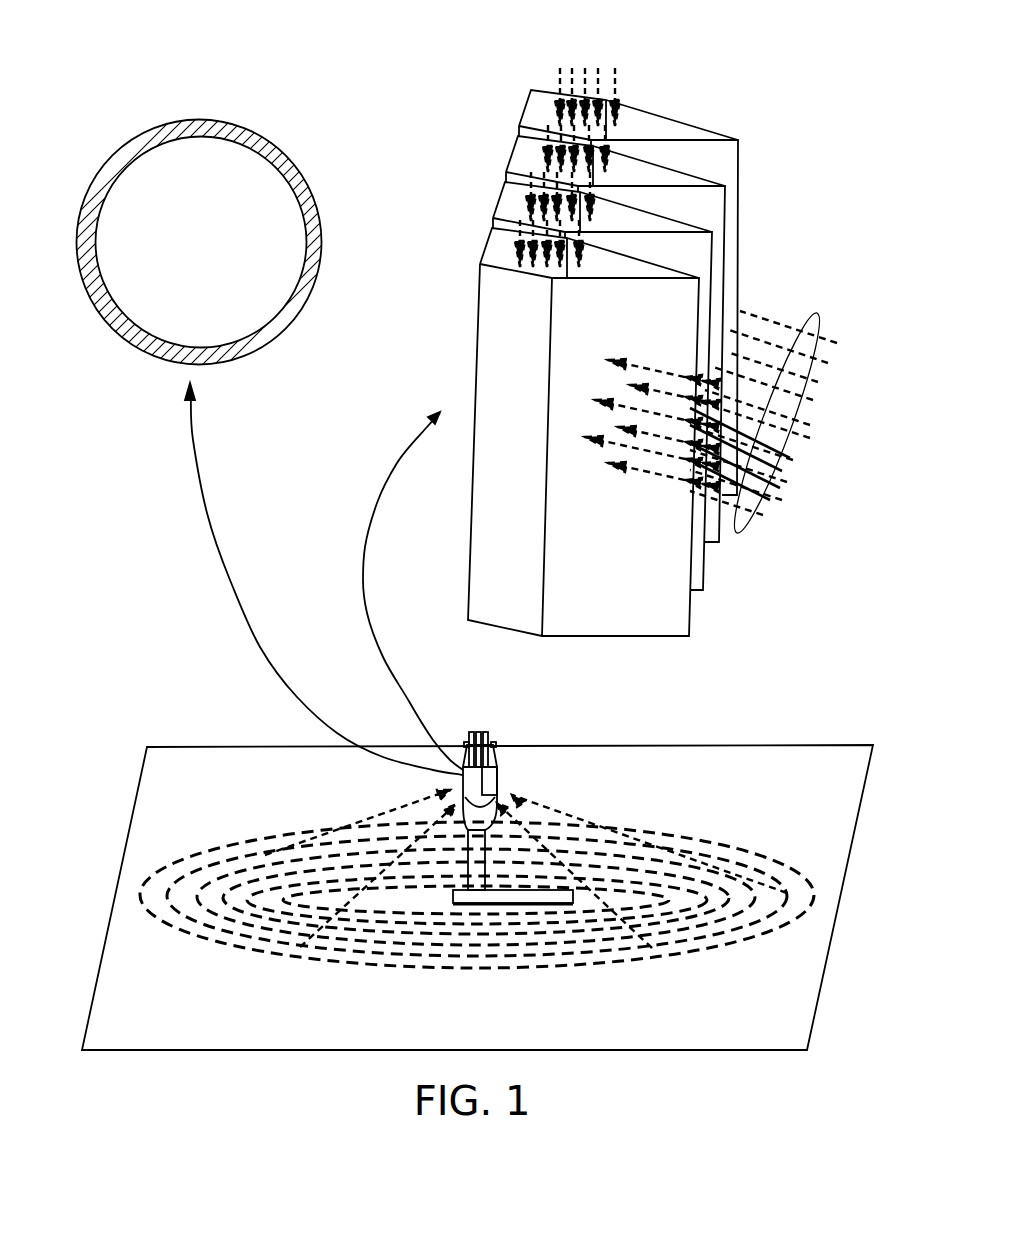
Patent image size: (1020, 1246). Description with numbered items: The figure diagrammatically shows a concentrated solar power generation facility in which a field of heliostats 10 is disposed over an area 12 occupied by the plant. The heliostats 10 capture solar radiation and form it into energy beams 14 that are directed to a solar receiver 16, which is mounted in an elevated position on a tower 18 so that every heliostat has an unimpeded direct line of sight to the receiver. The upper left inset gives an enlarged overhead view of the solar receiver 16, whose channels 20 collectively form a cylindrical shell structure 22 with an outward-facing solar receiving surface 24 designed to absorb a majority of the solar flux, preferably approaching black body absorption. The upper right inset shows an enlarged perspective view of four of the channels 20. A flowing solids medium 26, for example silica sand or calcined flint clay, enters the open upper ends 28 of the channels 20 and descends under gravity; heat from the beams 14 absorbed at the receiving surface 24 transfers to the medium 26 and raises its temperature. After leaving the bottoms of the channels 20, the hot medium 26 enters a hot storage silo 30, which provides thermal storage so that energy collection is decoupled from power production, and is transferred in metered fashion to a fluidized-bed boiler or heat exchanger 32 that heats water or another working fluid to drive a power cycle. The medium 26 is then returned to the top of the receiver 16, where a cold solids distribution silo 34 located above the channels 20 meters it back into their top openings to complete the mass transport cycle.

The heliostats 10 is at (237, 867).
The area 12 is at (128, 825).
The energy beams 14 is at (817, 313).
The solar receiver 16 is at (490, 782).
The tower 18 is at (475, 857).
The channels 20 is at (520, 330).
The cylindrical shell structure 22 is at (288, 118).
The outward-facing solar receiving surface 24 is at (228, 112).
The flowing solids medium 26 is at (537, 156).
The open upper ends 28 is at (625, 172).
The hot storage silo 30 is at (470, 816).
The fluidized-bed boiler or heat exchanger 32 is at (557, 897).
The cold solids distribution silo 34 is at (486, 742).